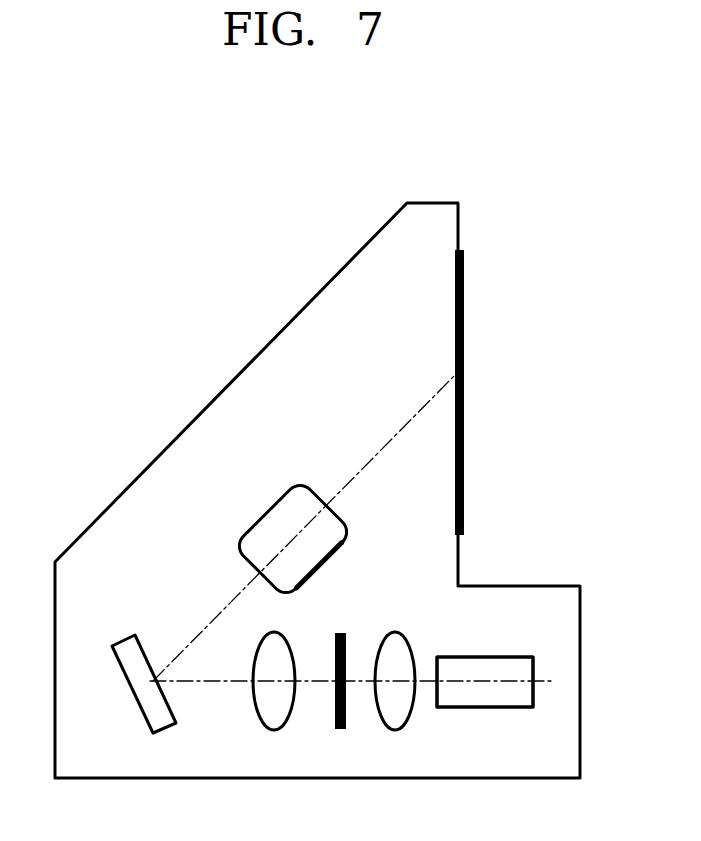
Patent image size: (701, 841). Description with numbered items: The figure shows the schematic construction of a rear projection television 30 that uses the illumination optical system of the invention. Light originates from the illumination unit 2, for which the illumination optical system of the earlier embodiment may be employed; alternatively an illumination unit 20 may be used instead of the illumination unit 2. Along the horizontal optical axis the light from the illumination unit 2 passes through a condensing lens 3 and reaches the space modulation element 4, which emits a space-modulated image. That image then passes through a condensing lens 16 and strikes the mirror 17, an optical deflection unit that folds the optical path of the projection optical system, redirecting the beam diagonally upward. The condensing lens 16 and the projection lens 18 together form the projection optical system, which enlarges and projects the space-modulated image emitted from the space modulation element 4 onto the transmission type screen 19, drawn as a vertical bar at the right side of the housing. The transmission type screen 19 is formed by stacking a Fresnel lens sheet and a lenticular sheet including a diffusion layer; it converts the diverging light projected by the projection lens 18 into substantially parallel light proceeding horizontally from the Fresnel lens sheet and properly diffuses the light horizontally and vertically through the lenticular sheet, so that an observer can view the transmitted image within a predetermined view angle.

The rear projection television 30 is at (283, 236).
The transmission type screen 19 is at (466, 485).
The projection lens 18 is at (263, 509).
The mirror 17 is at (143, 645).
The condensing lens 16 is at (291, 650).
The space modulation element 4 is at (348, 640).
The condensing lens 3 is at (405, 645).
The illumination unit 2 is at (478, 657).
The illumination unit 20 is at (485, 682).